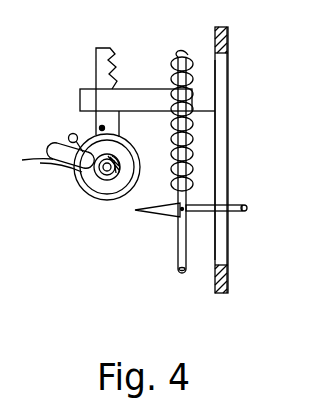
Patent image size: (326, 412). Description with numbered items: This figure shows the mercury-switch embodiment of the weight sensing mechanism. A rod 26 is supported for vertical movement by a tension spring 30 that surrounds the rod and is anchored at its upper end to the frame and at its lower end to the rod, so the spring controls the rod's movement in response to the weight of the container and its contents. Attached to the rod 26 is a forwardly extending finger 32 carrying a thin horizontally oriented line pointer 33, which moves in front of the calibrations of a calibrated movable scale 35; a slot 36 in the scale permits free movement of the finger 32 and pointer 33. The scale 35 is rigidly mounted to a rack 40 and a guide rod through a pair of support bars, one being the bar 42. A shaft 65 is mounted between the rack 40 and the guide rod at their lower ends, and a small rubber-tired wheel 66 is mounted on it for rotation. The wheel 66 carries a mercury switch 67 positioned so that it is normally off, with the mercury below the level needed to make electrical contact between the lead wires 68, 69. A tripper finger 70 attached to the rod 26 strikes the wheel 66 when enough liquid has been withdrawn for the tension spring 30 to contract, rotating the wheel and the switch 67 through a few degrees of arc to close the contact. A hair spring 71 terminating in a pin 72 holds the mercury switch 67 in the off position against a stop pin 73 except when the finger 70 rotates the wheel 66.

The rod 26 is at (179, 261).
The tension spring 30 is at (193, 78).
The finger 32 is at (222, 203).
The line pointer member 33 is at (247, 208).
The calibrated movable scale 35 is at (228, 35).
The slot 36 is at (225, 112).
The rack 40 is at (105, 53).
The support bar 42 is at (93, 97).
The shaft 65 is at (101, 198).
The rubber-tired wheel 66 is at (121, 200).
The mercury switch 67 is at (60, 145).
The lead wire 68 is at (27, 162).
The lead wire 69 is at (43, 165).
The tripper finger 70 is at (157, 212).
The hair spring 71 is at (130, 155).
The pin 72 is at (104, 128).
The stop pin 73 is at (71, 134).